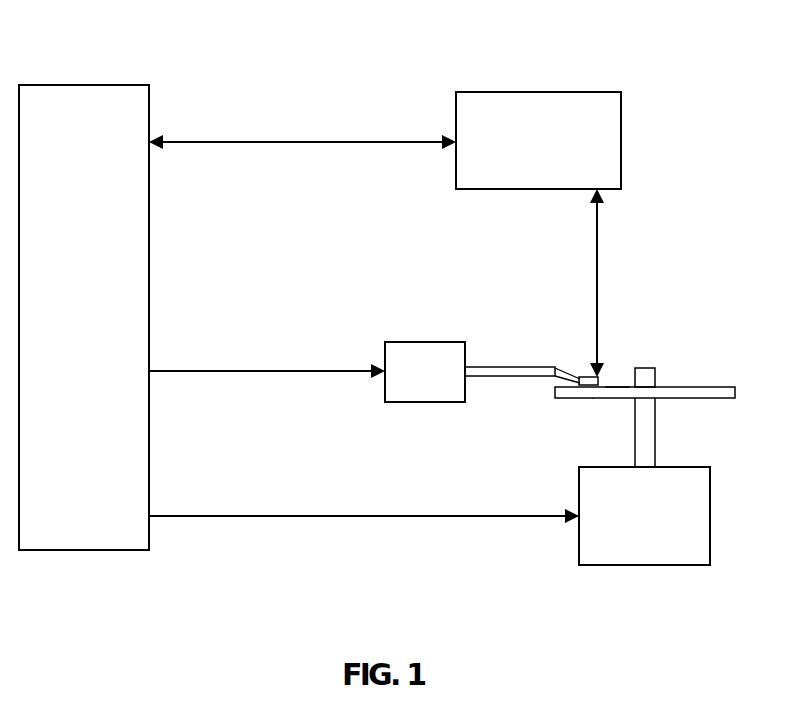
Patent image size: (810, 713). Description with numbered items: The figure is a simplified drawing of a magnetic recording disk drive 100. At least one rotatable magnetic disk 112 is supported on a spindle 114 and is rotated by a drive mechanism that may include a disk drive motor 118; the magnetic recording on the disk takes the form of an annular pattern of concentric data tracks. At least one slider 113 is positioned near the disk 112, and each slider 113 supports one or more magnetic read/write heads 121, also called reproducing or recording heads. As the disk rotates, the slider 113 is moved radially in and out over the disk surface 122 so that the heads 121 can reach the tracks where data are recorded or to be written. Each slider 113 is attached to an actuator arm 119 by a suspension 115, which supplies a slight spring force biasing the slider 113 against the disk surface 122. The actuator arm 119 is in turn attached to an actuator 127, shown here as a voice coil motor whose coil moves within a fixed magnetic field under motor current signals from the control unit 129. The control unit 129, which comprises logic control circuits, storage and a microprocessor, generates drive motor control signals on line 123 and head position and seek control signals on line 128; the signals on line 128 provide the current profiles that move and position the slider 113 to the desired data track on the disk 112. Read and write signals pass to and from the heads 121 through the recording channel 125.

The disk drive 100 is at (194, 566).
The magnetic disk 112 is at (688, 387).
The slider 113 is at (590, 376).
The spindle 114 is at (650, 368).
The suspension 115 is at (577, 378).
The disk drive motor 118 is at (687, 467).
The actuator arm 119 is at (510, 377).
The magnetic read/write heads 121 is at (593, 410).
The disk surface 122 is at (614, 387).
The line 123 is at (399, 516).
The recording channel 125 is at (537, 92).
The actuator 127 is at (437, 342).
The line 128 is at (247, 371).
The control unit 129 is at (133, 85).